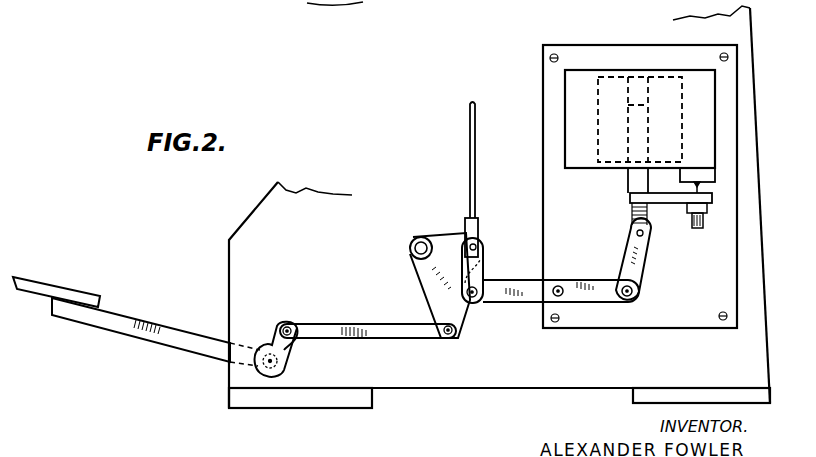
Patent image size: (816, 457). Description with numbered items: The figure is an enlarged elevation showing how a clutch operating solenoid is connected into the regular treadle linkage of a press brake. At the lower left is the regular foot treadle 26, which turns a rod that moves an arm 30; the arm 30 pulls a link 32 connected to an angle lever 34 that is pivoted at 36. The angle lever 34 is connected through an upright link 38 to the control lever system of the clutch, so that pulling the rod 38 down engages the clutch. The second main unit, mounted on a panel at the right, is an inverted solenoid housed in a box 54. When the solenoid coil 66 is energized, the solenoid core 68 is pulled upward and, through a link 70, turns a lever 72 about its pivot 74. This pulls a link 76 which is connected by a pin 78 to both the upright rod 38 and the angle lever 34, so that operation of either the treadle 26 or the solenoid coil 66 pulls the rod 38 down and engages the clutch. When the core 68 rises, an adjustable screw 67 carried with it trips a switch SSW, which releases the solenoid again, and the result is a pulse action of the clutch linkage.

The foot treadle 26 is at (122, 318).
The arm 30 is at (293, 343).
The link 32 is at (322, 333).
The angle lever 34 is at (451, 304).
The pivot 36 is at (410, 248).
The upright link 38 is at (470, 166).
The solenoid box 54 is at (578, 75).
The solenoid coil 66 is at (615, 88).
The adjustable screw 67 is at (704, 226).
The solenoid core 68 is at (640, 178).
The link 70 is at (642, 260).
The lever 72 is at (601, 289).
The pivot 74 is at (560, 286).
The link 76 is at (484, 272).
The pin 78 is at (479, 249).
The switch SSW is at (715, 175).